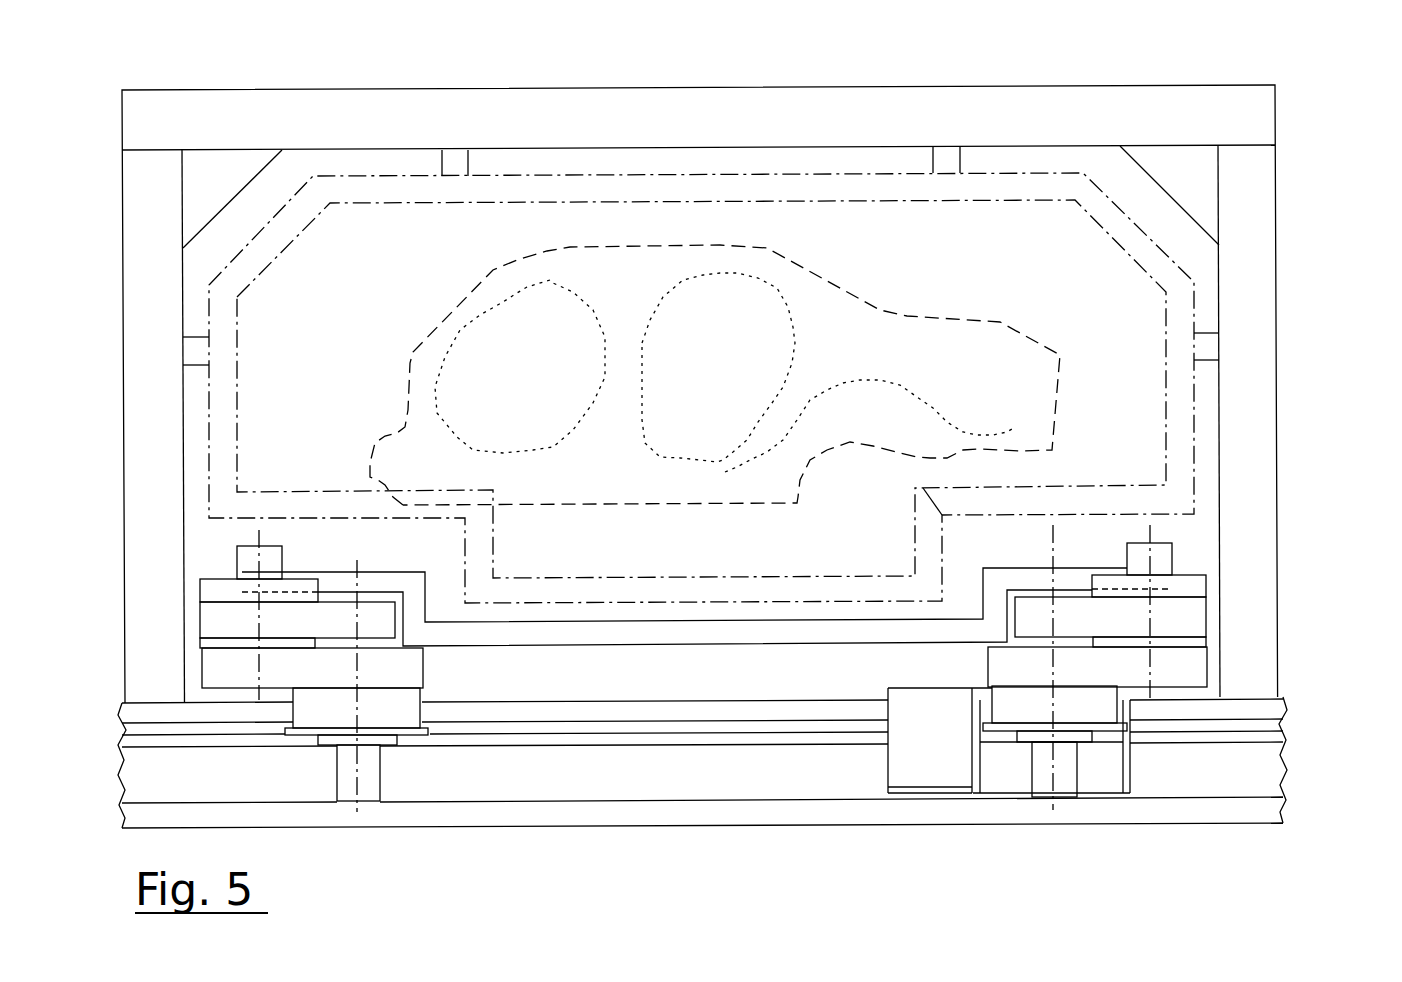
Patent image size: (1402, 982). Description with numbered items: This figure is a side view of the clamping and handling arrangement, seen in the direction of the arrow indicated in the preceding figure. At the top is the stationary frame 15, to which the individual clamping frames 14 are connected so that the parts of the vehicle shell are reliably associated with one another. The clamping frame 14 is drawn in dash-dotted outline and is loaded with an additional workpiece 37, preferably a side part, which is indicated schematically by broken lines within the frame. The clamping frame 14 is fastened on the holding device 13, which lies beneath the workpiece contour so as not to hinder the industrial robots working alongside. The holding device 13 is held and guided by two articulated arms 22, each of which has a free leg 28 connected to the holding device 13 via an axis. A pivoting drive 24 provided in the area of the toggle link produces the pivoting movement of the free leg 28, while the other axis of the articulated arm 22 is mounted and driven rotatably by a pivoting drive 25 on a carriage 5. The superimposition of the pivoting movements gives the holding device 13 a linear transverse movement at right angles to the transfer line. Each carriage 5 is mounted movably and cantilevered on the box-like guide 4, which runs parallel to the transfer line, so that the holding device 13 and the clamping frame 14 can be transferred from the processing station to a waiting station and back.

The guide 4 is at (707, 777).
The carriage 5 is at (325, 712).
The holding device 13 is at (638, 632).
The clamping frame 14 is at (958, 183).
The stationary frame 15 is at (1247, 420).
The articulated arm 22 is at (407, 667).
The pivoting drive 24 is at (250, 557).
The pivoting drive 25 is at (363, 775).
The free leg 28 is at (330, 617).
The workpiece 37 is at (425, 357).